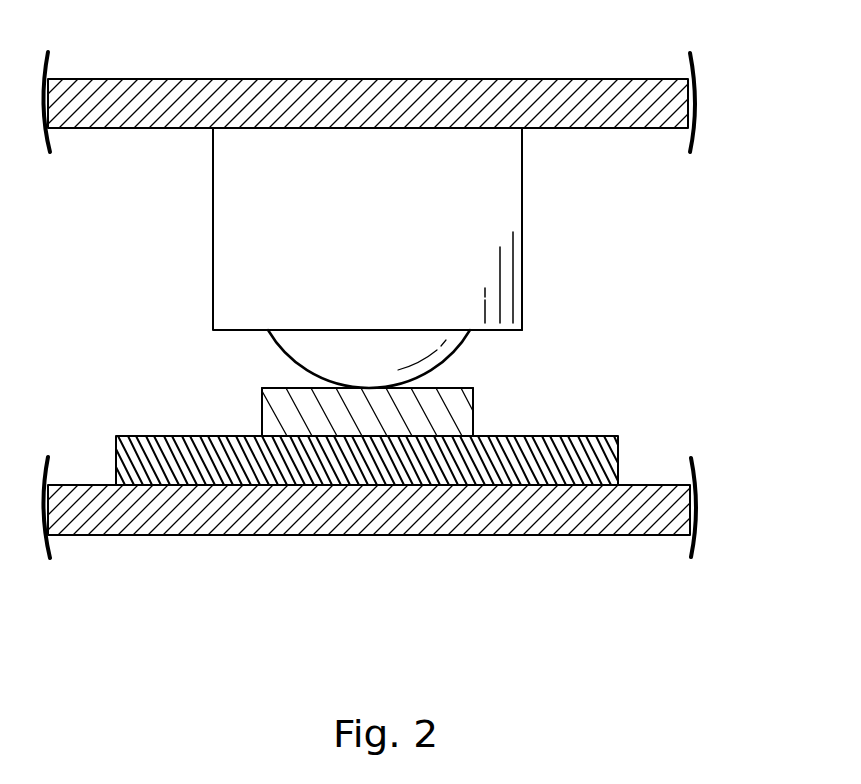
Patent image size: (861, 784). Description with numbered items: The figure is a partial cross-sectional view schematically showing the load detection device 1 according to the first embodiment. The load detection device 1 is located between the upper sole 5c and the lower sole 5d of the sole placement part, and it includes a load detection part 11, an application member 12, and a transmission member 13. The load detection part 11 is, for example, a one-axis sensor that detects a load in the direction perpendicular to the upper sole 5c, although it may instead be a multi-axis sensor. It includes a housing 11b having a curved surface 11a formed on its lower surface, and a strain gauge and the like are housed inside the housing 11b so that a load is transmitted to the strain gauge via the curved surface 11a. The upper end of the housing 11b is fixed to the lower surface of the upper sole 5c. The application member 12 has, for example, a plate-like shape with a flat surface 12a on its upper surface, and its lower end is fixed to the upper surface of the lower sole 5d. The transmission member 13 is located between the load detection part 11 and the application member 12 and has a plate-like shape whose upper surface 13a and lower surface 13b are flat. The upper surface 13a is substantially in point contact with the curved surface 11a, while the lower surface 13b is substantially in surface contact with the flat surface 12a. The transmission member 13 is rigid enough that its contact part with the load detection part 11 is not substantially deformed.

The load detection device 1 is at (371, 258).
The upper sole 5c is at (605, 90).
The lower sole 5d is at (607, 523).
The load detection part 11 is at (411, 258).
The curved surface 11a is at (460, 347).
The housing 11b is at (512, 205).
The application member 12 is at (417, 428).
The flat surface 12a is at (597, 436).
The transmission member 13 is at (356, 399).
The upper surface 13a is at (268, 388).
The lower surface 13b is at (277, 437).